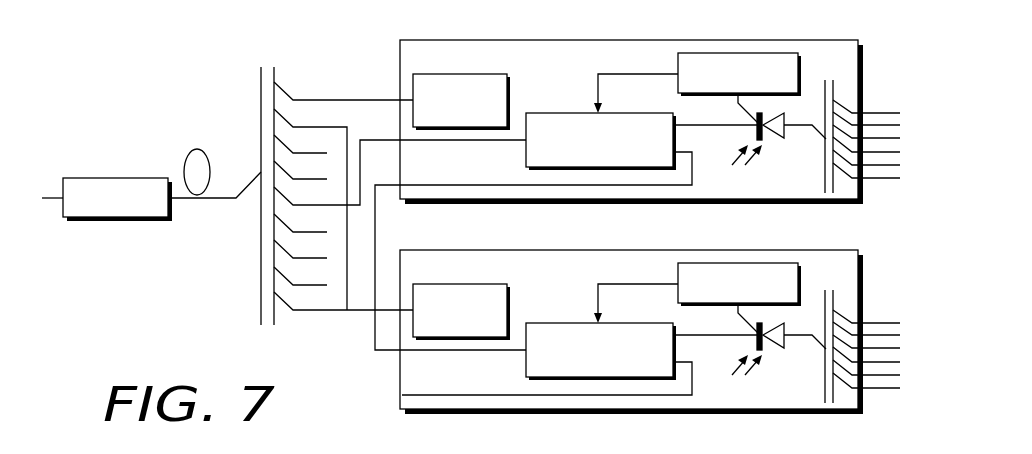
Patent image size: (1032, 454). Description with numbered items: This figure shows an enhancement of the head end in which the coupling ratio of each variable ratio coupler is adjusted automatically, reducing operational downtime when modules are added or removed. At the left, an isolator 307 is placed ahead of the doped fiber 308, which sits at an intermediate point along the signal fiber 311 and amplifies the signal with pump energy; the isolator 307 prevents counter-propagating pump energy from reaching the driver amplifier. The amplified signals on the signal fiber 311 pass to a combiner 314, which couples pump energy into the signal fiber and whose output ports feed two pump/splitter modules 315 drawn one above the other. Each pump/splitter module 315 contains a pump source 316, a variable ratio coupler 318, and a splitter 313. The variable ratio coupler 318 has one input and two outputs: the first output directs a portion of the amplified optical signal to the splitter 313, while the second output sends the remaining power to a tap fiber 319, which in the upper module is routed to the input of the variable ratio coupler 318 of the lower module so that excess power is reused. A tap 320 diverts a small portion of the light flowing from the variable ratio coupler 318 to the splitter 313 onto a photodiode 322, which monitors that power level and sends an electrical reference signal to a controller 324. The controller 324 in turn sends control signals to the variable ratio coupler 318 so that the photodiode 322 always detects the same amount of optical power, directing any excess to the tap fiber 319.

The isolator 307 is at (143, 221).
The doped fiber 308 is at (190, 148).
The signal fiber 311 is at (221, 197).
The splitter 313 is at (882, 180).
The combiner 314 is at (260, 107).
The pump/splitter module 315 is at (666, 40).
The pump source 316 is at (507, 100).
The variable ratio coupler 318 is at (608, 112).
The tap fiber 319 is at (507, 183).
The tap 320 is at (738, 104).
The photodiode 322 is at (779, 137).
The controller 324 is at (798, 72).